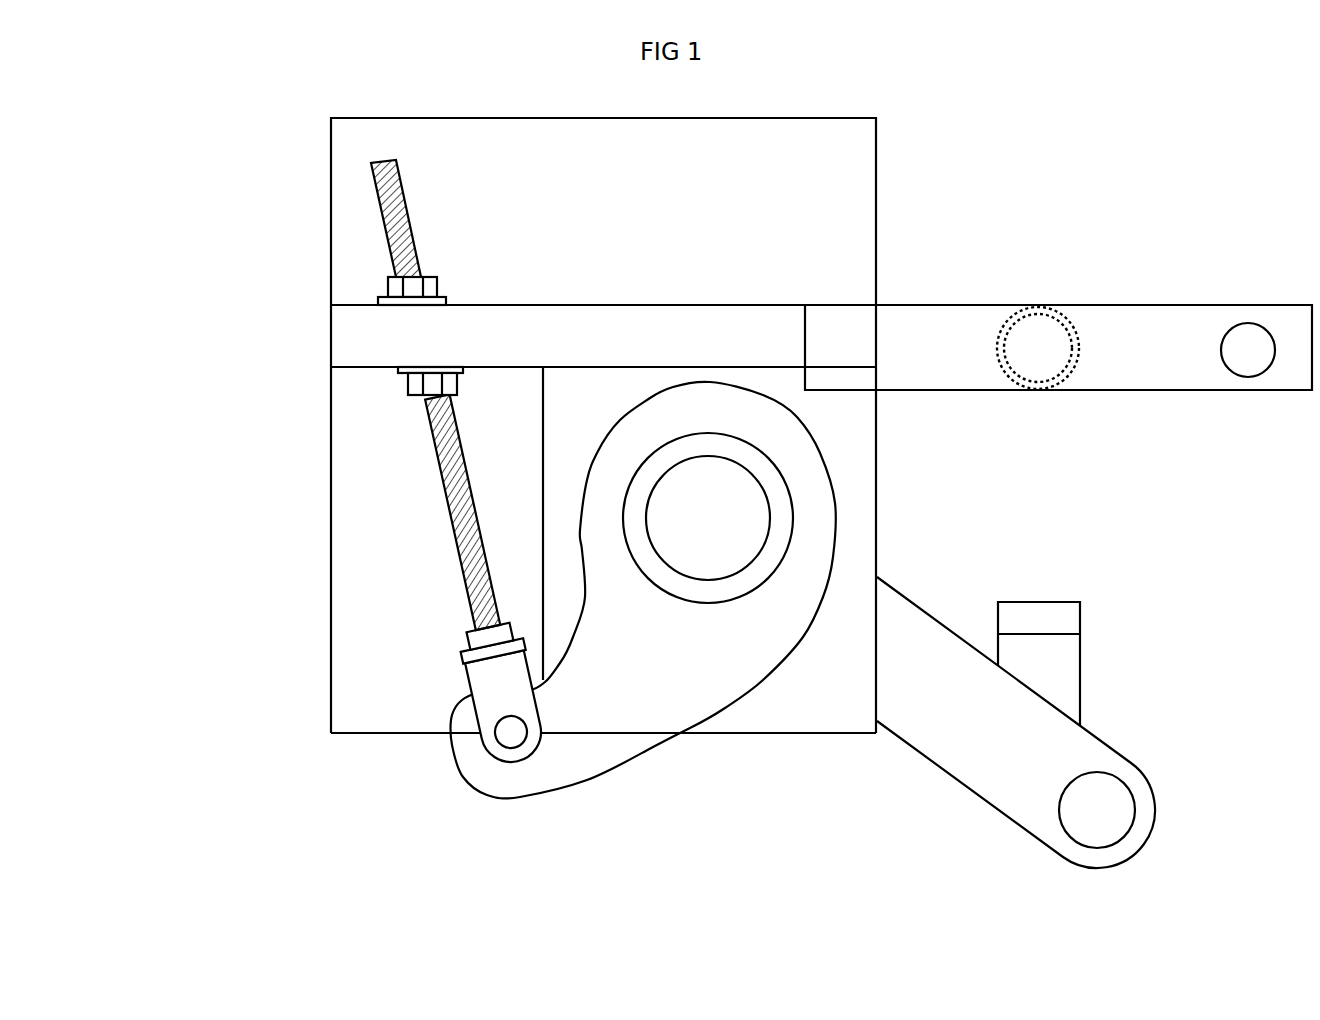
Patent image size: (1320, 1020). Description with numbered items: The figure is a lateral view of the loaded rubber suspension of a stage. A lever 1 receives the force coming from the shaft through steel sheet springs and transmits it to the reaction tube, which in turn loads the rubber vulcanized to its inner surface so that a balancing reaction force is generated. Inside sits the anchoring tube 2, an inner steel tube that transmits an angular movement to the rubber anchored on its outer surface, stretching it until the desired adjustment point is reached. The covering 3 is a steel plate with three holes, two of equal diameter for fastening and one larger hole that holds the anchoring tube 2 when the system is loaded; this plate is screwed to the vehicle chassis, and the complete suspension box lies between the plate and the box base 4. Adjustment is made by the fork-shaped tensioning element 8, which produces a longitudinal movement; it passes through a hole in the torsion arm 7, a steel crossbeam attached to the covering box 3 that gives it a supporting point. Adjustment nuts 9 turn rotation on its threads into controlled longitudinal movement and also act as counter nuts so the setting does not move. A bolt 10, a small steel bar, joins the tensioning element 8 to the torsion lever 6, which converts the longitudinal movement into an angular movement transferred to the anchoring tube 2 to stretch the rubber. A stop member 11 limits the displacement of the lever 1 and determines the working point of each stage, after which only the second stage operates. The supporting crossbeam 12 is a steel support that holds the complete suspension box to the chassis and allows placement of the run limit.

The lever 1 is at (1021, 848).
The anchoring tube 2 is at (812, 520).
The covering 3 is at (850, 752).
The box base 4 is at (895, 241).
The torsion lever 6 is at (834, 434).
The torsion arm 7 is at (312, 335).
The fork-shaped tensioning element 8 is at (429, 540).
The adjustment nuts 9 is at (368, 286).
The bolt 10 is at (473, 723).
The stop member 11 is at (1105, 632).
The supporting crossbeam 12 is at (1278, 410).